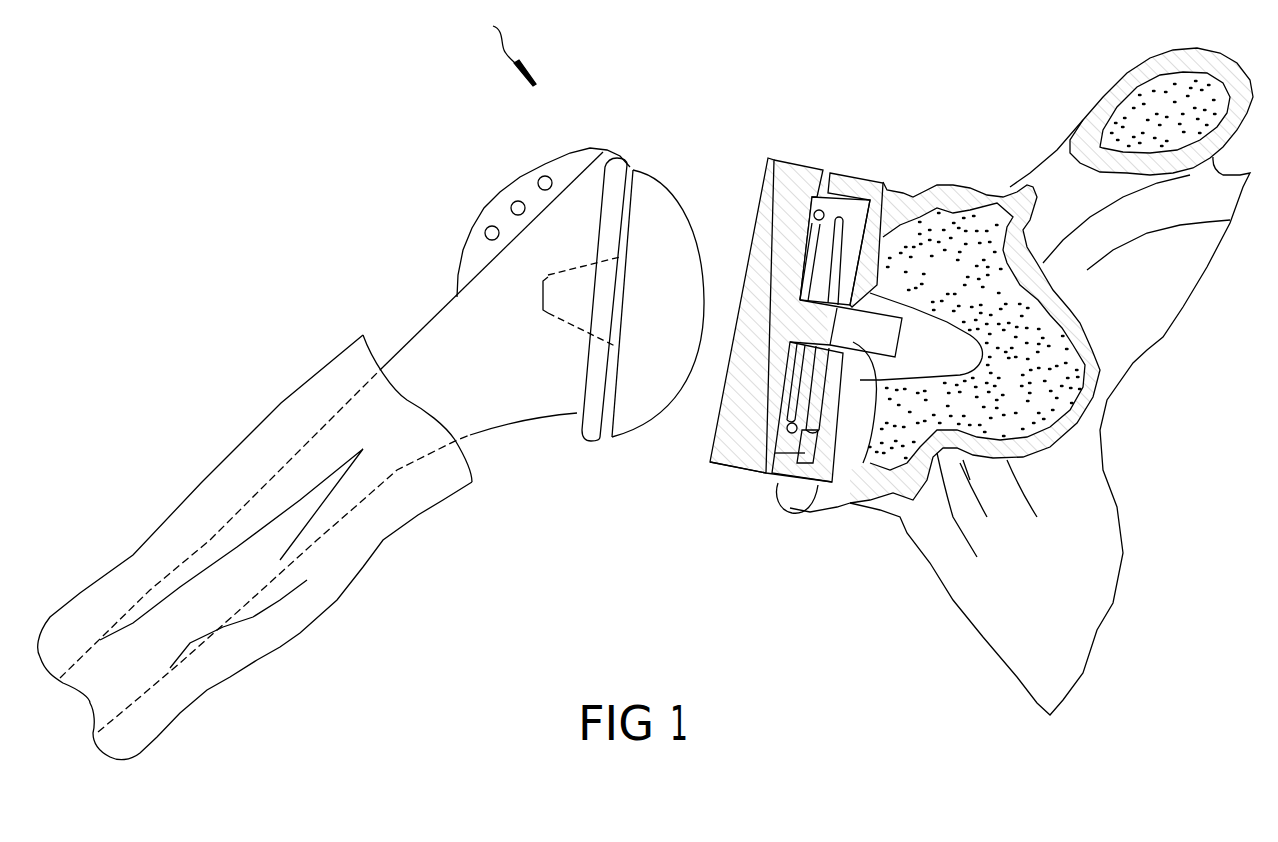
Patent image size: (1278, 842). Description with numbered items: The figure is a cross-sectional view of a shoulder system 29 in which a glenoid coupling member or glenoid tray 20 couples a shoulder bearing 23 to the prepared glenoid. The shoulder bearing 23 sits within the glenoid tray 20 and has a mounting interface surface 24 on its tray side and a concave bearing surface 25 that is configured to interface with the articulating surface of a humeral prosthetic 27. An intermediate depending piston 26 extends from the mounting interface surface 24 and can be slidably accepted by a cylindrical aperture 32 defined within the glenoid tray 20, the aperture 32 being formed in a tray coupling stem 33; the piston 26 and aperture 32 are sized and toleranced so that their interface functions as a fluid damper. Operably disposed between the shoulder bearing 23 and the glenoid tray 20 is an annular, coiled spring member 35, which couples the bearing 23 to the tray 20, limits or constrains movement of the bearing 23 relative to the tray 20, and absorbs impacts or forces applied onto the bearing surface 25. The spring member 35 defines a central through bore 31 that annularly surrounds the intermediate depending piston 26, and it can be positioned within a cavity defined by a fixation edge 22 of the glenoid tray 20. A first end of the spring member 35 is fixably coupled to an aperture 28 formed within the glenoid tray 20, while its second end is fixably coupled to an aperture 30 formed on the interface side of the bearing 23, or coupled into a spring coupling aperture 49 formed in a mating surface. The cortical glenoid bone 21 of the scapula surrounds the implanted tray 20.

The glenoid tray 20 is at (883, 237).
The glenoid cortical bone 21 is at (897, 230).
The fixation edge 22 is at (857, 183).
The shoulder bearing 23 is at (797, 177).
The mounting interface surface 24 is at (813, 162).
The concave bearing surface 25 is at (722, 418).
The intermediate depending piston 26 is at (845, 497).
The humeral prosthetic 27 is at (453, 337).
The aperture 28 is at (793, 507).
The shoulder system 29 is at (501, 50).
The aperture 30 is at (815, 211).
The central through bore 31 is at (813, 255).
The cylindrical aperture 32 is at (888, 322).
The tray coupling stem 33 is at (953, 353).
The annular spring member 35 is at (790, 432).
The spring coupling aperture 49 is at (813, 217).